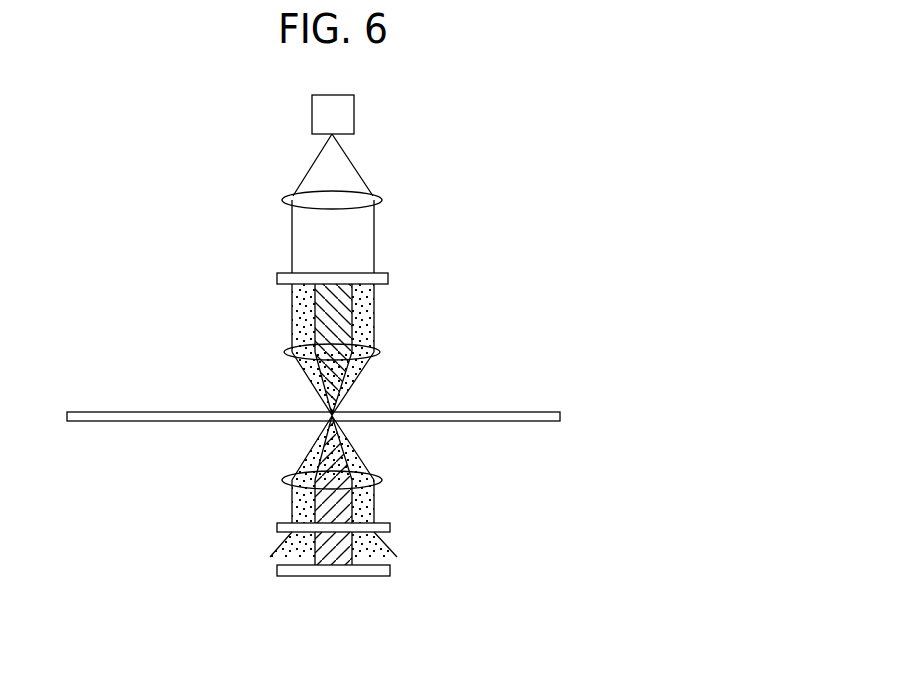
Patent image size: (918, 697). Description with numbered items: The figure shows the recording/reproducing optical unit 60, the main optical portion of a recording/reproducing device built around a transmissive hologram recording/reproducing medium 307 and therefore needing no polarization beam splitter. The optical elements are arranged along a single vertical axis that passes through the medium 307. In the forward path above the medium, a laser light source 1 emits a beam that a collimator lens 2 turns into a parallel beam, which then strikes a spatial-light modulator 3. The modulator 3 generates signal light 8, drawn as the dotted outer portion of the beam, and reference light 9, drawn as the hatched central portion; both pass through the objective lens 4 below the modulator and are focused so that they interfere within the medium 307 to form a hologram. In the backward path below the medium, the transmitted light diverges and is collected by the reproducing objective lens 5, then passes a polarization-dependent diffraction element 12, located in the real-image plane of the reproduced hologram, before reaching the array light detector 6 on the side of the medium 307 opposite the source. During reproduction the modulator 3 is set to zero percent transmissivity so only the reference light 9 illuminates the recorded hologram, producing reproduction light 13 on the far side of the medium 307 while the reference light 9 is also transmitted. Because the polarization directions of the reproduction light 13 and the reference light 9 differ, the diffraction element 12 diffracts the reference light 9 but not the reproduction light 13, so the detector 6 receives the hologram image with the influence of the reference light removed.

The laser light source 1 is at (348, 115).
The collimator lens 2 is at (382, 200).
The spatial-light modulator 3 is at (388, 278).
The objective lens 4 is at (380, 353).
The condenser lens 5 is at (382, 481).
The array light detector 6 is at (390, 570).
The signal light 8 is at (322, 312).
The reference light 9 is at (307, 332).
The polarization-dependent diffraction element 12 is at (390, 528).
The reproduction light 13 is at (316, 553).
The recording/reproducing optical unit 60 is at (491, 215).
The transmissive hologram recording/reproducing medium 307 is at (515, 411).